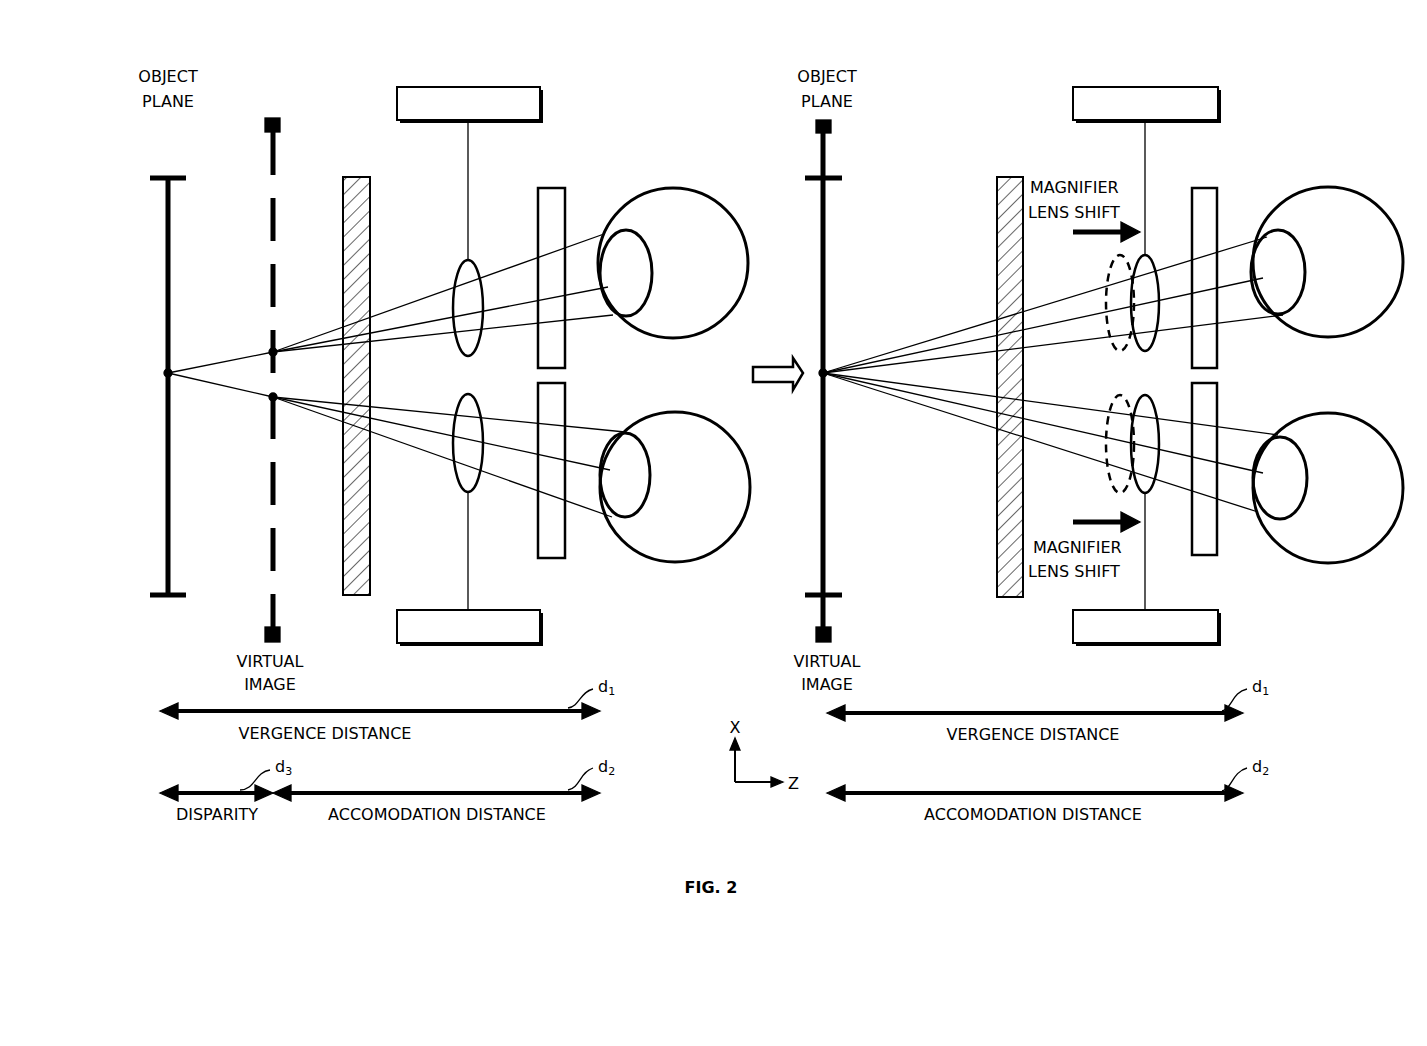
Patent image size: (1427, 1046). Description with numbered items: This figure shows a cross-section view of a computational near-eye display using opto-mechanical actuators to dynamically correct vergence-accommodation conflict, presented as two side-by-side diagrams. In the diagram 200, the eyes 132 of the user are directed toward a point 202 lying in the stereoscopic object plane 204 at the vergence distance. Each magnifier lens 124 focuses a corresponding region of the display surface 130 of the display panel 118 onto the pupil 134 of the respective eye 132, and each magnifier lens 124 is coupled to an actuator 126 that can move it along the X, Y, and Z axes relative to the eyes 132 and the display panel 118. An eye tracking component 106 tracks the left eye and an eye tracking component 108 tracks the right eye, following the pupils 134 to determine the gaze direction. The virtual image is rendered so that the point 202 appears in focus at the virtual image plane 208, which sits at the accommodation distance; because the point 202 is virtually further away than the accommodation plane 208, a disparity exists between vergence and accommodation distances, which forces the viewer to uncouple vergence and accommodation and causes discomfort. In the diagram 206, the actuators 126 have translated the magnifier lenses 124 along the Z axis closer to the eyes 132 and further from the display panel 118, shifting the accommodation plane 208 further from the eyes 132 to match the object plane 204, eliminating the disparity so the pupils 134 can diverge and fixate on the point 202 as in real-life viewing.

The diagram 200 is at (348, 71).
The diagram 206 is at (1338, 71).
The point 202 is at (723, 375).
The stereoscopic object plane 204 is at (520, 385).
The virtual image plane 208 is at (578, 380).
The display panel 118 is at (684, 363).
The display surface 130 is at (721, 415).
The actuator 126 is at (809, 366).
The magnifier lens 124 is at (806, 379).
The eye tracking component 108 is at (911, 261).
The eye tracking component 106 is at (911, 488).
The eye 132 is at (1000, 375).
The pupil 134 is at (951, 373).